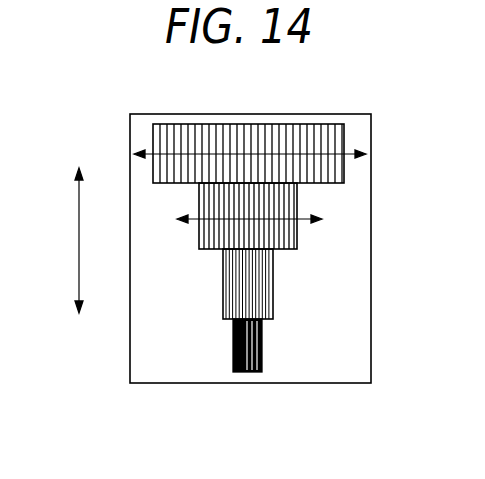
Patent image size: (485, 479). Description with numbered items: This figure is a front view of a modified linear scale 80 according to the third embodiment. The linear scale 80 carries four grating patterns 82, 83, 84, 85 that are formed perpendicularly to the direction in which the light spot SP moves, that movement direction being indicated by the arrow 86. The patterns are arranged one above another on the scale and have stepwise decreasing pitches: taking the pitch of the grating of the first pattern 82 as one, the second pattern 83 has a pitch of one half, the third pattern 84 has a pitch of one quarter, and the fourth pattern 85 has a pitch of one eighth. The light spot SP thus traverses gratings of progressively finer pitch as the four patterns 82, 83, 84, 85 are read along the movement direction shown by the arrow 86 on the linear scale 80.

The linear scale 80 is at (345, 108).
The pattern 82 is at (345, 171).
The pattern 83 is at (297, 239).
The pattern 84 is at (273, 307).
The pattern 85 is at (262, 360).
The arrow 86 is at (79, 265).
The light spot SP is at (141, 143).